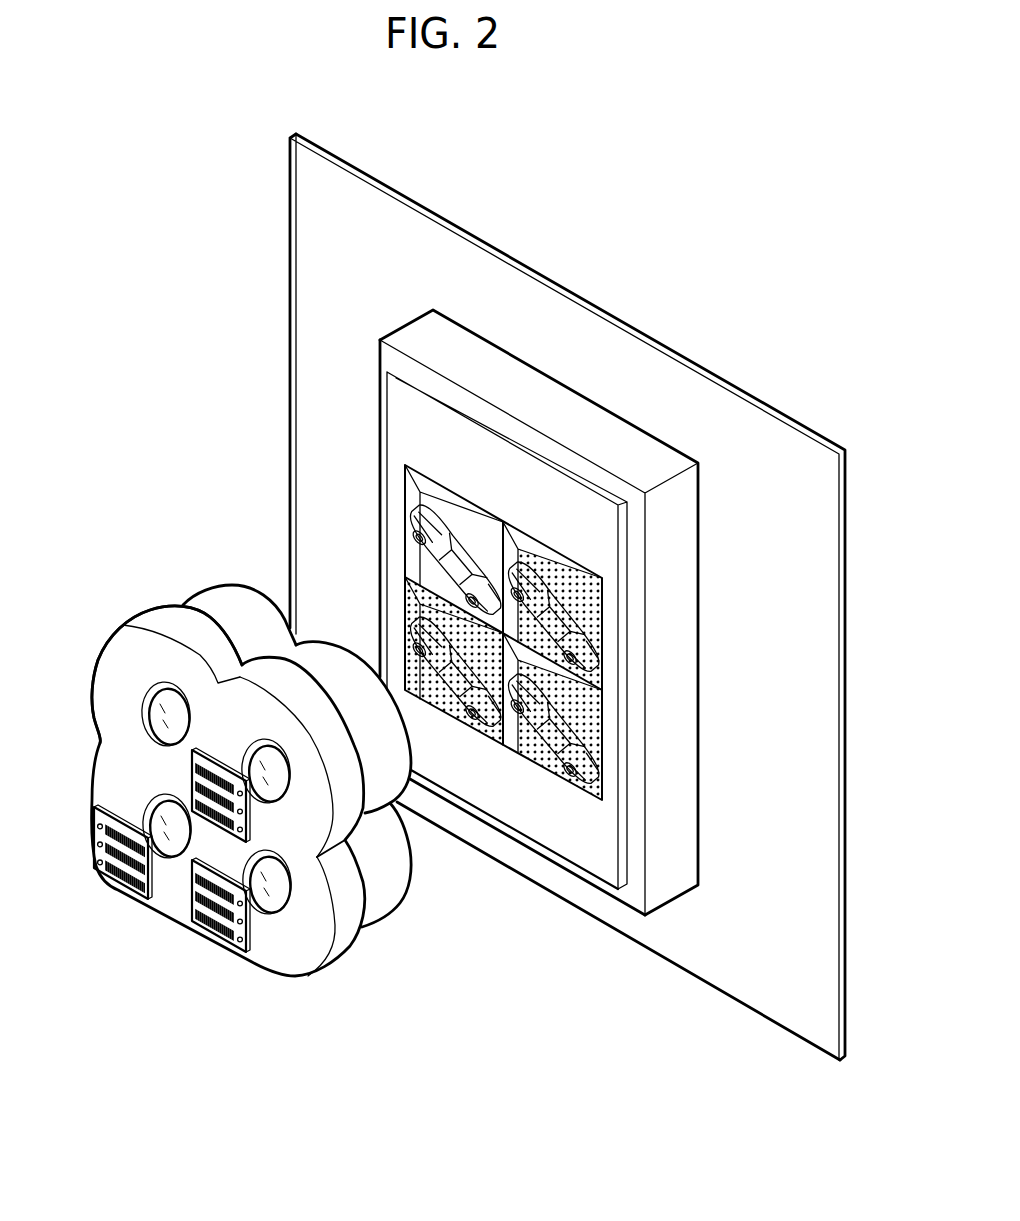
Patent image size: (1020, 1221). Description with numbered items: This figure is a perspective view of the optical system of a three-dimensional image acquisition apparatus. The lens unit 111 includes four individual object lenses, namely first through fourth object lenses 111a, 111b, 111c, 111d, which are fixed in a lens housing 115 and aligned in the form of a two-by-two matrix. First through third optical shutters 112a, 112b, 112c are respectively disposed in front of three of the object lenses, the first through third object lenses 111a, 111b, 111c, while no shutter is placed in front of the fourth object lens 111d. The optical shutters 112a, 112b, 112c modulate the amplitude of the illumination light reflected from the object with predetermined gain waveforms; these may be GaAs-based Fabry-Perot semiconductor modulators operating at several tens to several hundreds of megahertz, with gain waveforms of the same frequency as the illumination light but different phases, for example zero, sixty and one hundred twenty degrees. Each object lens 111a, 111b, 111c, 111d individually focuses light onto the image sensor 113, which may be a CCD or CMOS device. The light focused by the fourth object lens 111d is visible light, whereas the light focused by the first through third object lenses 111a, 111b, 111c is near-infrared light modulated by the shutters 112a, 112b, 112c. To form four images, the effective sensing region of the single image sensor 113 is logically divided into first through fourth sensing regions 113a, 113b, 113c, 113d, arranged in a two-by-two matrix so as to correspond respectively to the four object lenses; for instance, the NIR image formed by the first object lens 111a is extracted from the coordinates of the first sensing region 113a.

The lens unit 111 is at (220, 789).
The first object lens 111a is at (172, 842).
The second object lens 111b is at (273, 897).
The third object lens 111c is at (262, 755).
The fourth object lens 111d is at (160, 703).
The first optical shutter 112a is at (128, 893).
The second optical shutter 112b is at (228, 936).
The third optical shutter 112c is at (190, 778).
The image sensor 113 is at (539, 567).
The first sensing region 113a is at (462, 690).
The second sensing region 113b is at (548, 757).
The third sensing region 113c is at (557, 560).
The fourth sensing region 113d is at (466, 509).
The lens housing 115 is at (120, 637).